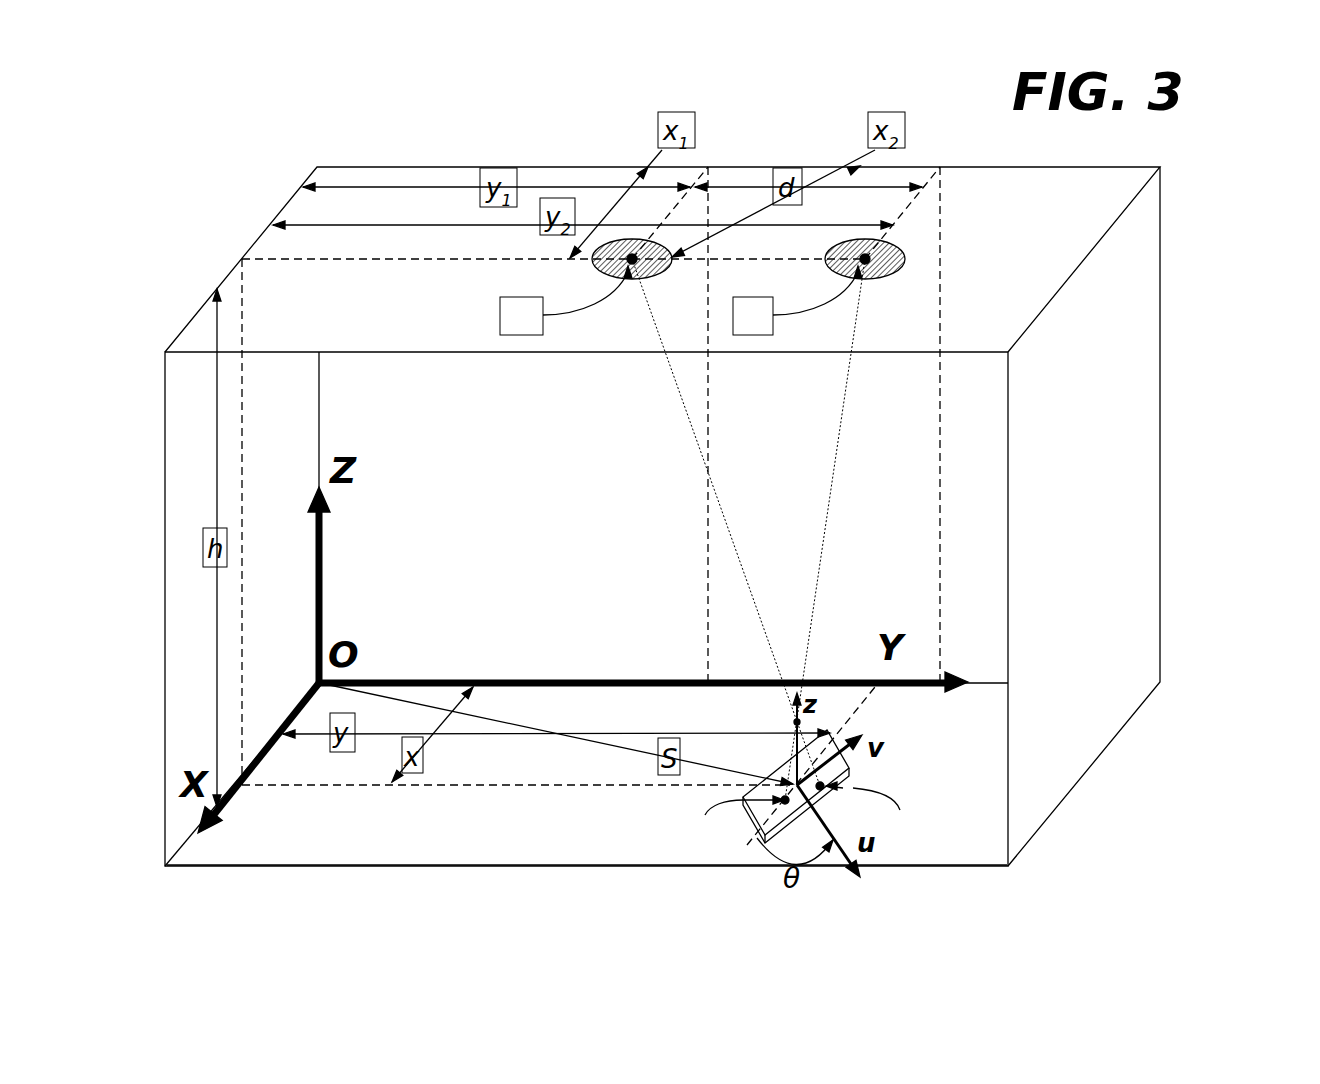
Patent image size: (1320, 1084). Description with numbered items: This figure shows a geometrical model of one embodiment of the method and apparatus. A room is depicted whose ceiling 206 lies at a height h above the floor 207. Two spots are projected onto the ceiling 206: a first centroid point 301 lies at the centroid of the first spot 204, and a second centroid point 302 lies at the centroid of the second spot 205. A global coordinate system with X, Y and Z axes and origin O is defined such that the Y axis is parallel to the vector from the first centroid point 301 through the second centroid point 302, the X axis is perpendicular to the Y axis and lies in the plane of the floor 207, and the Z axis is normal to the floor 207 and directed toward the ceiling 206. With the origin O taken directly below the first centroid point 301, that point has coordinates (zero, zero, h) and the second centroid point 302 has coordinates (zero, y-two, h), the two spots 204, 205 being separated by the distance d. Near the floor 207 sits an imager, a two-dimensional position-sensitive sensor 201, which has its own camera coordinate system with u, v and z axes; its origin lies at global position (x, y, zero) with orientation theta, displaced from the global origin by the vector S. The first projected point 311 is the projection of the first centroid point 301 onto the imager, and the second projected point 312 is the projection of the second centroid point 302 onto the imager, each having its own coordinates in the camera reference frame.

The mobile device 201 is at (849, 768).
The first spot 204 is at (597, 272).
The second spot 205 is at (905, 262).
The ceiling 206 is at (1108, 195).
The floor 207 is at (353, 862).
The point w1 301 is at (500, 320).
The point w2 302 is at (733, 320).
The point c1 311 is at (930, 813).
The point c2 312 is at (683, 833).